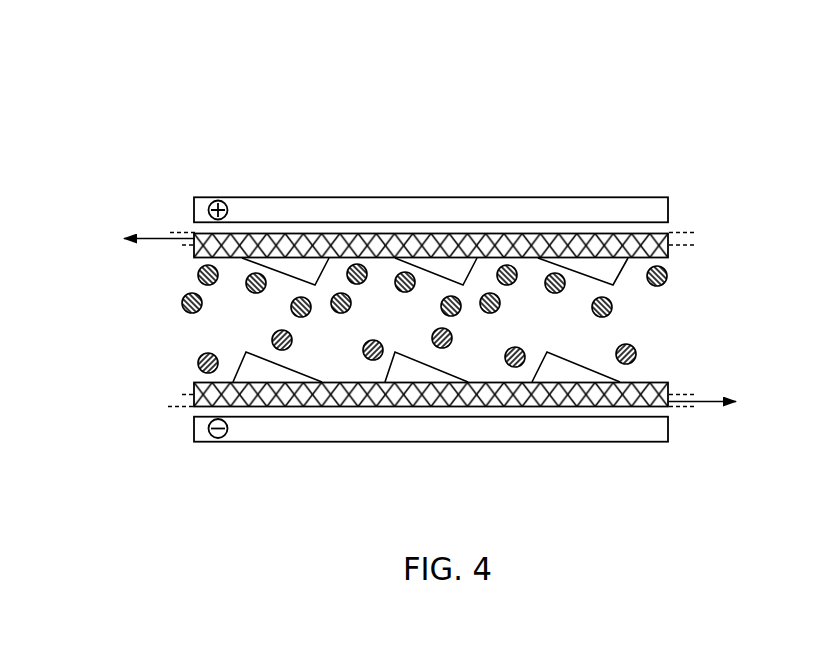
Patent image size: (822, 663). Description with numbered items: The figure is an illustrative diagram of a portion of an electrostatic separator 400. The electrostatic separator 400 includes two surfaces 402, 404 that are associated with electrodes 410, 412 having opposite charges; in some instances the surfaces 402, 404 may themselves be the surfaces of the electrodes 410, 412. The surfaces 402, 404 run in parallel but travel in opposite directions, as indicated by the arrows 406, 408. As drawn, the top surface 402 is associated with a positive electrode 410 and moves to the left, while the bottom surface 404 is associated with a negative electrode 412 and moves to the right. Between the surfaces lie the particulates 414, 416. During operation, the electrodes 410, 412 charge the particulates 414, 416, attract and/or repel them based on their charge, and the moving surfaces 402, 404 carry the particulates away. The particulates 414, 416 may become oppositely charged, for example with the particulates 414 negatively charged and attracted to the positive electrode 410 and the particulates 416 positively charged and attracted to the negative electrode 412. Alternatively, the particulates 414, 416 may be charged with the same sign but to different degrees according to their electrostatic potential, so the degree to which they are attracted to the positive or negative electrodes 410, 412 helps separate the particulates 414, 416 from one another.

The electrostatic separator 400 is at (104, 68).
The top surface 402 is at (192, 252).
The bottom surface 404 is at (195, 405).
The arrow 406 is at (155, 238).
The arrow 408 is at (713, 399).
The positive electrode 410 is at (658, 206).
The negative electrode 412 is at (660, 432).
The particulates 414 is at (611, 306).
The particulates 416 is at (272, 337).